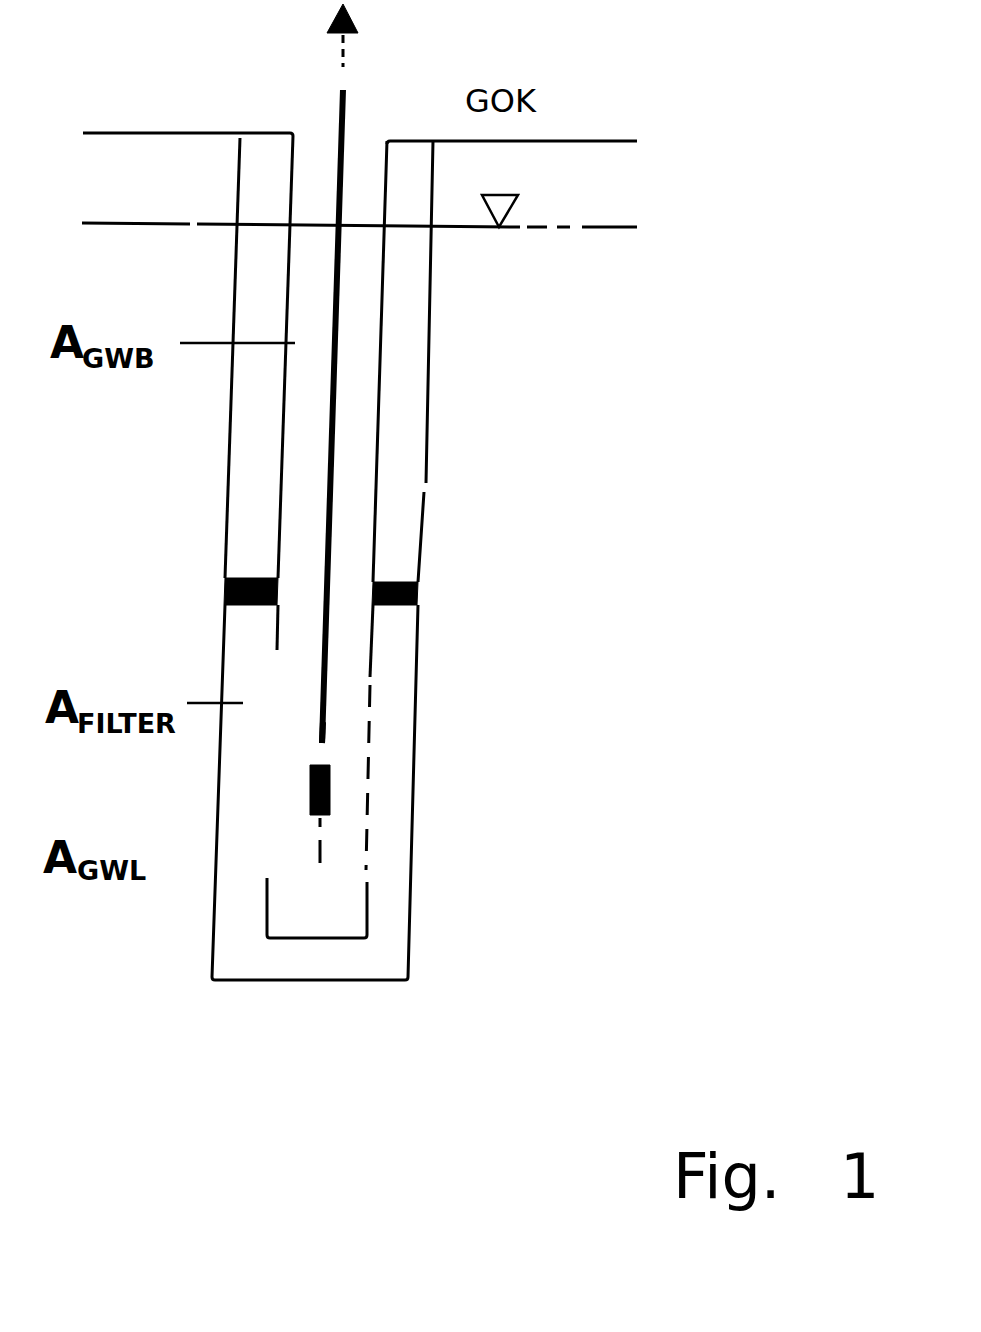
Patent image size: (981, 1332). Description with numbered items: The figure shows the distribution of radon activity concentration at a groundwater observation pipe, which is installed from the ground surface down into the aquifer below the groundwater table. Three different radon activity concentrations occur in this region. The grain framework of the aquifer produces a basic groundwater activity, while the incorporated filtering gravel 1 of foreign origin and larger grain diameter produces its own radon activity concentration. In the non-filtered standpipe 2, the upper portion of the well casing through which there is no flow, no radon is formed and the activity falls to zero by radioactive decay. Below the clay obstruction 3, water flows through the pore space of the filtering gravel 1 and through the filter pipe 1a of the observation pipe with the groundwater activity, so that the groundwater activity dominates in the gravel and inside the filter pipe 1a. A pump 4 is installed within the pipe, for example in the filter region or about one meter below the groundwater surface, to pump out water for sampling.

The filtering gravel 1 is at (372, 677).
The filter pipe 1a is at (327, 757).
The standpipe 2 is at (368, 282).
The clay obstruction 3 is at (418, 595).
The pump 4 is at (330, 808).